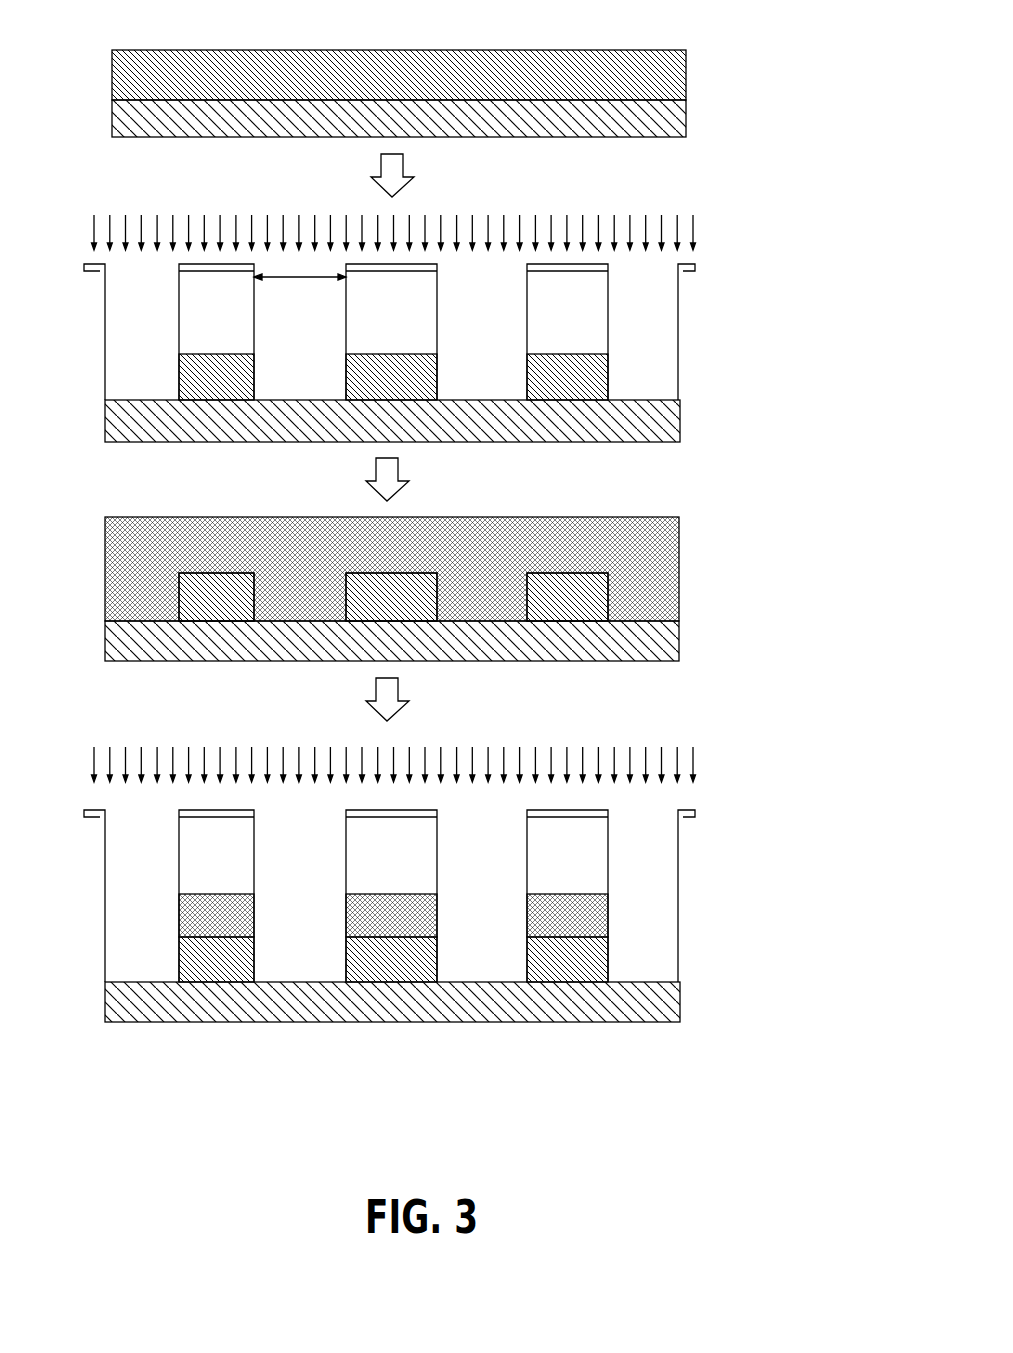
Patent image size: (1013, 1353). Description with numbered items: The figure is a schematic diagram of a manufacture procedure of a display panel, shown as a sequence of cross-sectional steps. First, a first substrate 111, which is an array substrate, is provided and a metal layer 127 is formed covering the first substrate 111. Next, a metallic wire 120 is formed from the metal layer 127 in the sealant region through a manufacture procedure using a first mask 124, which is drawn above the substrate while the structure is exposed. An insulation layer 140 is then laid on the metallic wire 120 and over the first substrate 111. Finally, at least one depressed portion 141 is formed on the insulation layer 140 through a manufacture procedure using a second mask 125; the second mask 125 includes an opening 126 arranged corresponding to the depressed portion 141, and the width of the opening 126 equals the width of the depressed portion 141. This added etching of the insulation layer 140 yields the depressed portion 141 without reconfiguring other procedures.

The first substrate 111 is at (665, 125).
The metal layer 127 is at (660, 75).
The opening 126 is at (290, 277).
The first mask 124 is at (608, 265).
The metallic wire 120 is at (608, 380).
The insulation layer 140 is at (630, 582).
The second mask 125 is at (588, 810).
The depressed portion 141 is at (643, 975).